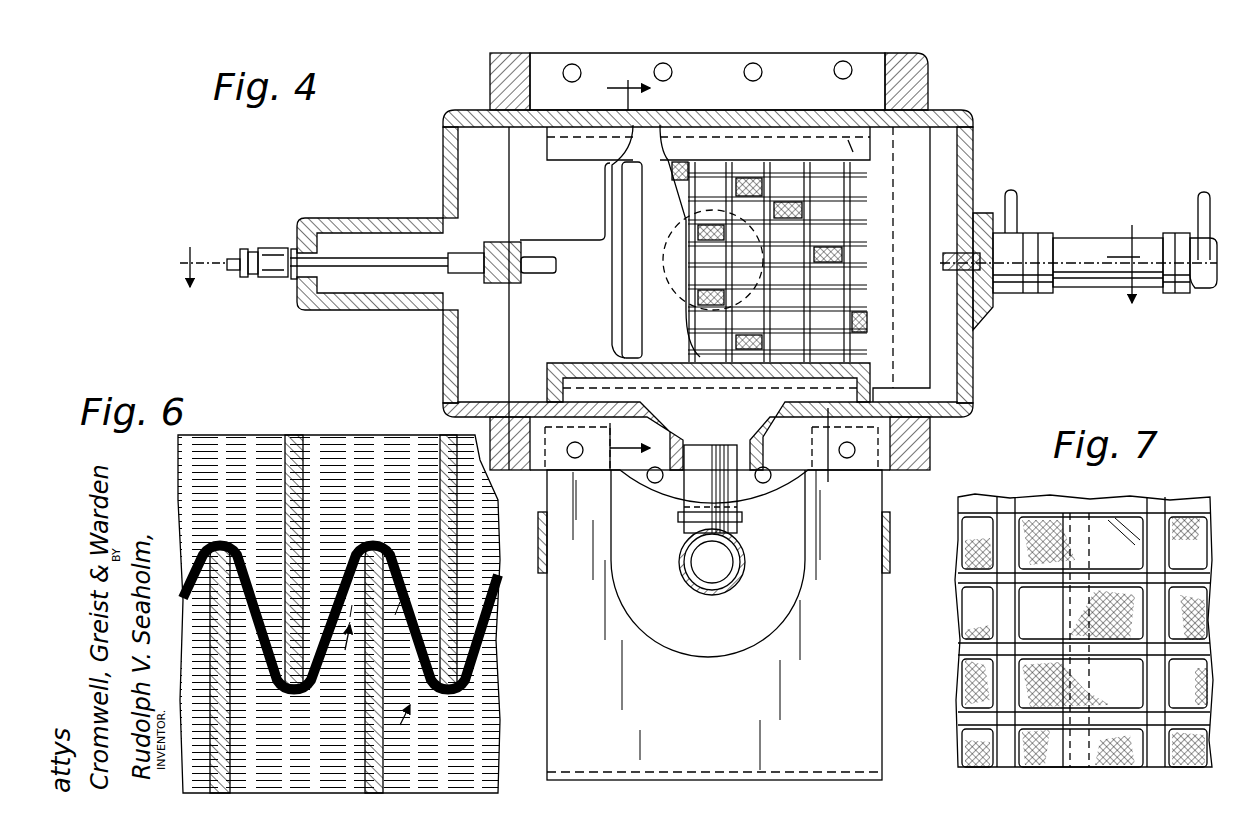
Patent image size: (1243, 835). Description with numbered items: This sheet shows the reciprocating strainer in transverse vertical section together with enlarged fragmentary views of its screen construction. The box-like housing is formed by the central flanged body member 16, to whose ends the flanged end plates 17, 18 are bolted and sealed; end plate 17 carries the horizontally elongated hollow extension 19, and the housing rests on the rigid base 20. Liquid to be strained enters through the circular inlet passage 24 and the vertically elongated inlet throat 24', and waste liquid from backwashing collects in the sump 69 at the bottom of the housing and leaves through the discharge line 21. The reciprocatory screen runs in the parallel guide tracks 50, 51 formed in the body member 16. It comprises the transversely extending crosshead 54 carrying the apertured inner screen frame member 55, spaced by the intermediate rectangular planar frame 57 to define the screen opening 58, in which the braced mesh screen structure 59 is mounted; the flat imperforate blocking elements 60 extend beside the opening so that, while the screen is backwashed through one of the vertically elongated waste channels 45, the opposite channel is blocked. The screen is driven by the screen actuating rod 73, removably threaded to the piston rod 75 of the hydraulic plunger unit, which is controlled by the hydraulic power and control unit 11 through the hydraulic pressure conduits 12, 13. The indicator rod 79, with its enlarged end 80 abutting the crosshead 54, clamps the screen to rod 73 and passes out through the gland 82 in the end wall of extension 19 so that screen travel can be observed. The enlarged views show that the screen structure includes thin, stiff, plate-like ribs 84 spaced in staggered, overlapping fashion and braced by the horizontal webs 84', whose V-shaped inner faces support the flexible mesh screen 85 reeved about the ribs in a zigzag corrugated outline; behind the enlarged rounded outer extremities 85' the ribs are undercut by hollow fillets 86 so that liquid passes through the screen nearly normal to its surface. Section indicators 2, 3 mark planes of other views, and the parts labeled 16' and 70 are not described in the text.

In FIG. 4, the section line 2- 2 is at (656, 264).
In FIG. 4, the section line 3- 3 is at (628, 266).
In FIG. 4, the hydraulic power and control unit 11 is at (1100, 248).
In FIG. 4, the hydraulic pressure conduit 12 is at (1017, 205).
In FIG. 4, the hydraulic pressure conduit 13 is at (1198, 200).
In FIG. 4, the central flanged body member 16 is at (690, 264).
In FIG. 4, the flange channel 16' is at (862, 114).
In FIG. 4, the flanged end plate 17 is at (470, 118).
In FIG. 4, the flanged end plate 18 is at (932, 110).
In FIG. 4, the hollow extension 19 is at (373, 305).
In FIG. 4, the rigid base 20 is at (868, 650).
In FIG. 4, the discharge line 21 is at (746, 565).
In FIG. 4, the circular inlet passage 24 is at (704, 262).
In FIG. 4, the inlet throat 24' is at (634, 241).
In FIG. 4, the waste channel 45 is at (633, 225).
In FIG. 4, the guide track 50 is at (793, 135).
In FIG. 4, the guide track 51 is at (587, 378).
In FIG. 4, the crosshead 54 is at (495, 242).
In FIG. 4, the inner screen frame member 55 is at (576, 298).
In FIG. 4, the intermediate rectangular planar frame 57 is at (888, 235).
In FIG. 6, the screen opening 58 is at (238, 445).
In FIG. 6, the braced mesh screen structure 59 is at (382, 689).
In FIG. 4, the blocking element 60 is at (918, 172).
In FIG. 4, the sump 69 is at (743, 412).
In FIG. 4, the outlet tube 70 is at (682, 532).
In FIG. 4, the screen actuating rod 73 is at (540, 273).
In FIG. 4, the piston rod 75 is at (978, 250).
In FIG. 4, the indicator rod 79 is at (355, 258).
In FIG. 4, the enlarged end 80 is at (470, 283).
In FIG. 4, the gland 82 is at (273, 280).
In FIG. 4, the plate-like rib 84 is at (896, 335).
In FIG. 6, the plate-like rib 84 is at (352, 614).
In FIG. 7, the plate-like rib 84 is at (1084, 632).
In FIG. 6, the horizontal web 84' is at (424, 584).
In FIG. 7, the horizontal web 84' is at (1084, 642).
In FIG. 4, the flexible mesh screen 85 is at (796, 252).
In FIG. 6, the flexible mesh screen 85 is at (340, 590).
In FIG. 7, the flexible mesh screen 85 is at (1095, 640).
In FIG. 6, the enlarged rounded outer extremity 85' is at (411, 610).
In FIG. 7, the enlarged rounded outer extremity 85' is at (1064, 617).
In FIG. 6, the hollow fillet 86 is at (240, 545).
In FIG. 7, the hollow fillet 86 is at (985, 548).